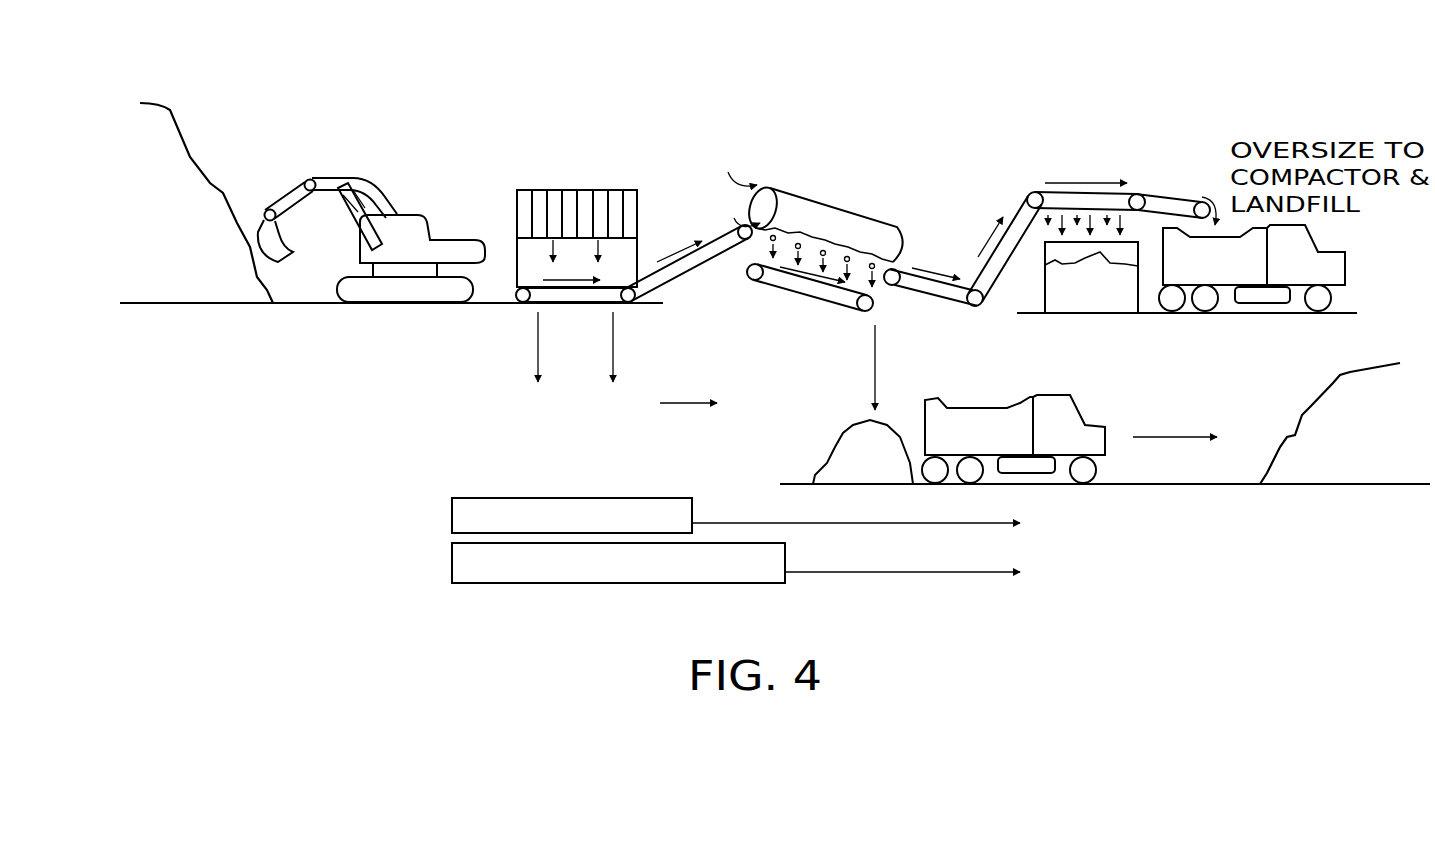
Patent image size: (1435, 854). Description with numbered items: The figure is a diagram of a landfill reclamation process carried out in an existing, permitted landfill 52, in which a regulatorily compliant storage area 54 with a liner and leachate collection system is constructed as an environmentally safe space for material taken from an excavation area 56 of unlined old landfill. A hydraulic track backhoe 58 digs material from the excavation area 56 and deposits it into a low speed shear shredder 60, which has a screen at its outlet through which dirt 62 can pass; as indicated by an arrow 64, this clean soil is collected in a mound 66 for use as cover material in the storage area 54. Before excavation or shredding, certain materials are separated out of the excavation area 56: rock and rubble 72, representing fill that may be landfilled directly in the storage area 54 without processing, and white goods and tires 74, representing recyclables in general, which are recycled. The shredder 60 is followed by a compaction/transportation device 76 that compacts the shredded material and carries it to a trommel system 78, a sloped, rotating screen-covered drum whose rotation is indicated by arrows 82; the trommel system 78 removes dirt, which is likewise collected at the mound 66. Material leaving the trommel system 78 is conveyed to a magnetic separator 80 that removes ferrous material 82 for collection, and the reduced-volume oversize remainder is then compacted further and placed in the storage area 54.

The existing permitted landfill 52 is at (498, 600).
The storage area 54 is at (1368, 402).
The excavation area 56 is at (162, 187).
The hydraulic track backhoe 58 is at (405, 223).
The low speed shear shredder 60 is at (640, 198).
The dirt 62 is at (488, 395).
The arrow 64 is at (672, 405).
The mound 66 is at (885, 470).
The rock and rubble 72 is at (468, 497).
The white goods and tires 74 is at (452, 567).
The compaction/transportation device 76 is at (700, 270).
The trommel system 78 is at (845, 217).
The magnetic separator 80 is at (998, 130).
The ferrous material 82 is at (1105, 300).